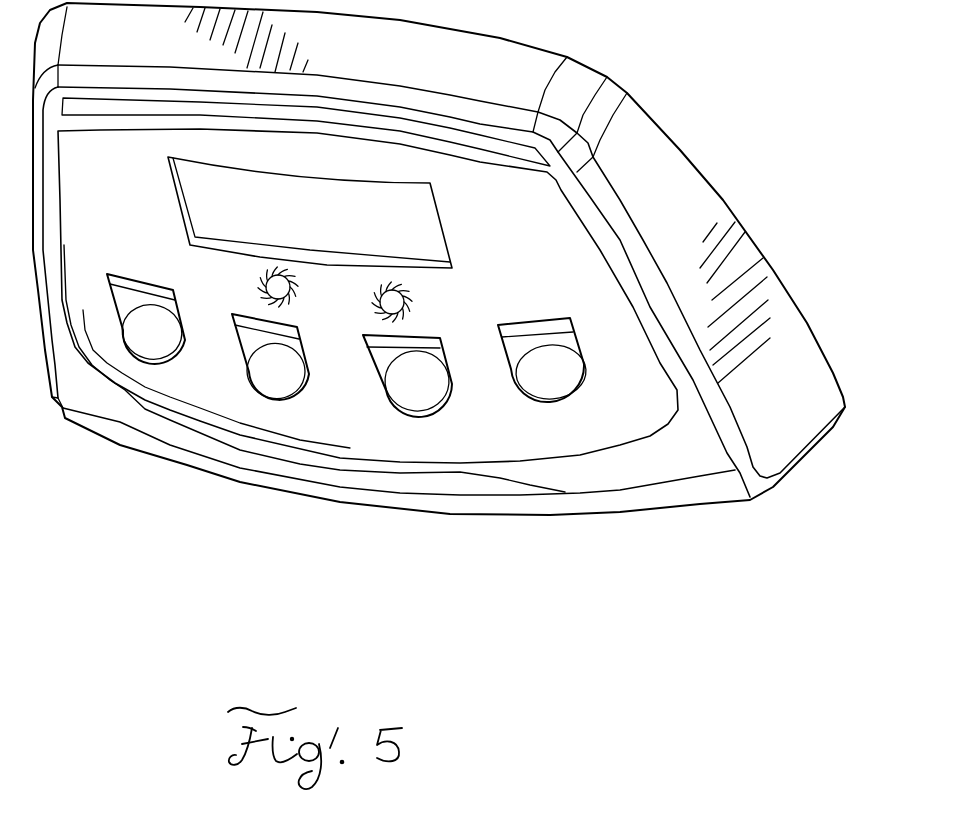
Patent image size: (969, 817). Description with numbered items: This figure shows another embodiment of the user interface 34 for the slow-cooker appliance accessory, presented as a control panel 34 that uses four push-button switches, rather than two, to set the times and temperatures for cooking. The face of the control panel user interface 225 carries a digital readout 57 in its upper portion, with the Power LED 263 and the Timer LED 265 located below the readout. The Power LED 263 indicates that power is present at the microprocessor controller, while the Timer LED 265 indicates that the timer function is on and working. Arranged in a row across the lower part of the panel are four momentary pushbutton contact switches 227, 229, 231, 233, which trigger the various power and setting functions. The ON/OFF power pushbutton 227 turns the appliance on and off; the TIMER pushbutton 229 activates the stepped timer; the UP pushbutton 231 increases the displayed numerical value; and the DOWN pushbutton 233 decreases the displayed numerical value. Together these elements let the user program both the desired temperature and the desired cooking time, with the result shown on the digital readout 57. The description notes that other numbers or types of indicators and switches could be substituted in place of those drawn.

The user interface 34 is at (697, 117).
The digital readout 57 is at (430, 223).
The control panel user interface 225 is at (540, 520).
The ON/OFF power pushbutton 227 is at (160, 348).
The TIMER pushbutton 229 is at (285, 387).
The UP pushbutton 231 is at (425, 407).
The DOWN pushbutton 233 is at (565, 390).
The Power LED 263 is at (262, 284).
The Timer LED 265 is at (412, 303).